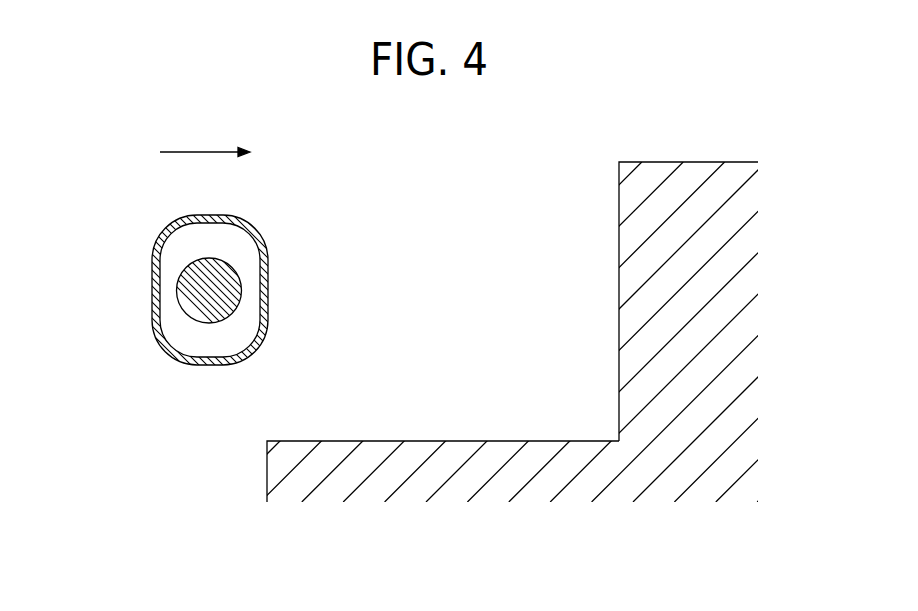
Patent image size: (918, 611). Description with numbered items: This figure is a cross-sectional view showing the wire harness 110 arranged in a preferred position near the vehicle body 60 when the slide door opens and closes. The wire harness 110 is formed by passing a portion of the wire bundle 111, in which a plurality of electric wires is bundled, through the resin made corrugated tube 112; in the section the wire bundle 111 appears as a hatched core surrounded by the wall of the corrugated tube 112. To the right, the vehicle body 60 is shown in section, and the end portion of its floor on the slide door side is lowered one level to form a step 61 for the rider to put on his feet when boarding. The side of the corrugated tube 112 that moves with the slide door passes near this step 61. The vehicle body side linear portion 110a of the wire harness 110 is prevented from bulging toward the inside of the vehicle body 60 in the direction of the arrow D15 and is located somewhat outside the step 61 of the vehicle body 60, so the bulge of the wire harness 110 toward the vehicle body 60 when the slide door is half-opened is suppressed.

The arrow direction D15 is at (205, 150).
The vehicle body 60 is at (693, 162).
The step 61 is at (542, 440).
The wire harness 110 is at (214, 281).
The vehicle body side linear portion 110a is at (214, 295).
The wire bundle 111 is at (243, 291).
The corrugated tube 112 is at (155, 323).